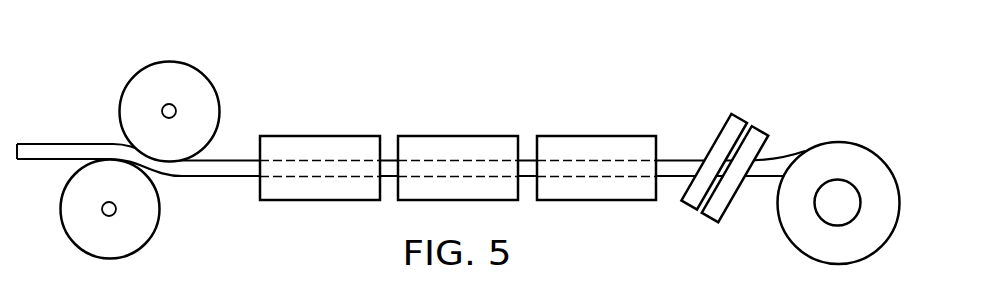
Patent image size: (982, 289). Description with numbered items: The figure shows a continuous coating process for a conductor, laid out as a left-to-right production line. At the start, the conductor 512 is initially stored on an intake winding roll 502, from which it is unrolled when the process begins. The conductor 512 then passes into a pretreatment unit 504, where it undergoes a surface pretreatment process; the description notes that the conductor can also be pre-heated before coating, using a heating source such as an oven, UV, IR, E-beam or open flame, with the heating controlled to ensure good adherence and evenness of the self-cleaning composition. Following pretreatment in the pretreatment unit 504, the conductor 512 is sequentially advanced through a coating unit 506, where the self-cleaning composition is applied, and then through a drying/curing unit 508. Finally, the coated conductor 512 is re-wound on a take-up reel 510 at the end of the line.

The intake winding roll 502 is at (167, 61).
The pretreatment unit 504 is at (320, 135).
The coating unit 506 is at (458, 135).
The drying/curing unit 508 is at (597, 135).
The take-up reel 510 is at (839, 141).
The conductor 512 is at (213, 178).